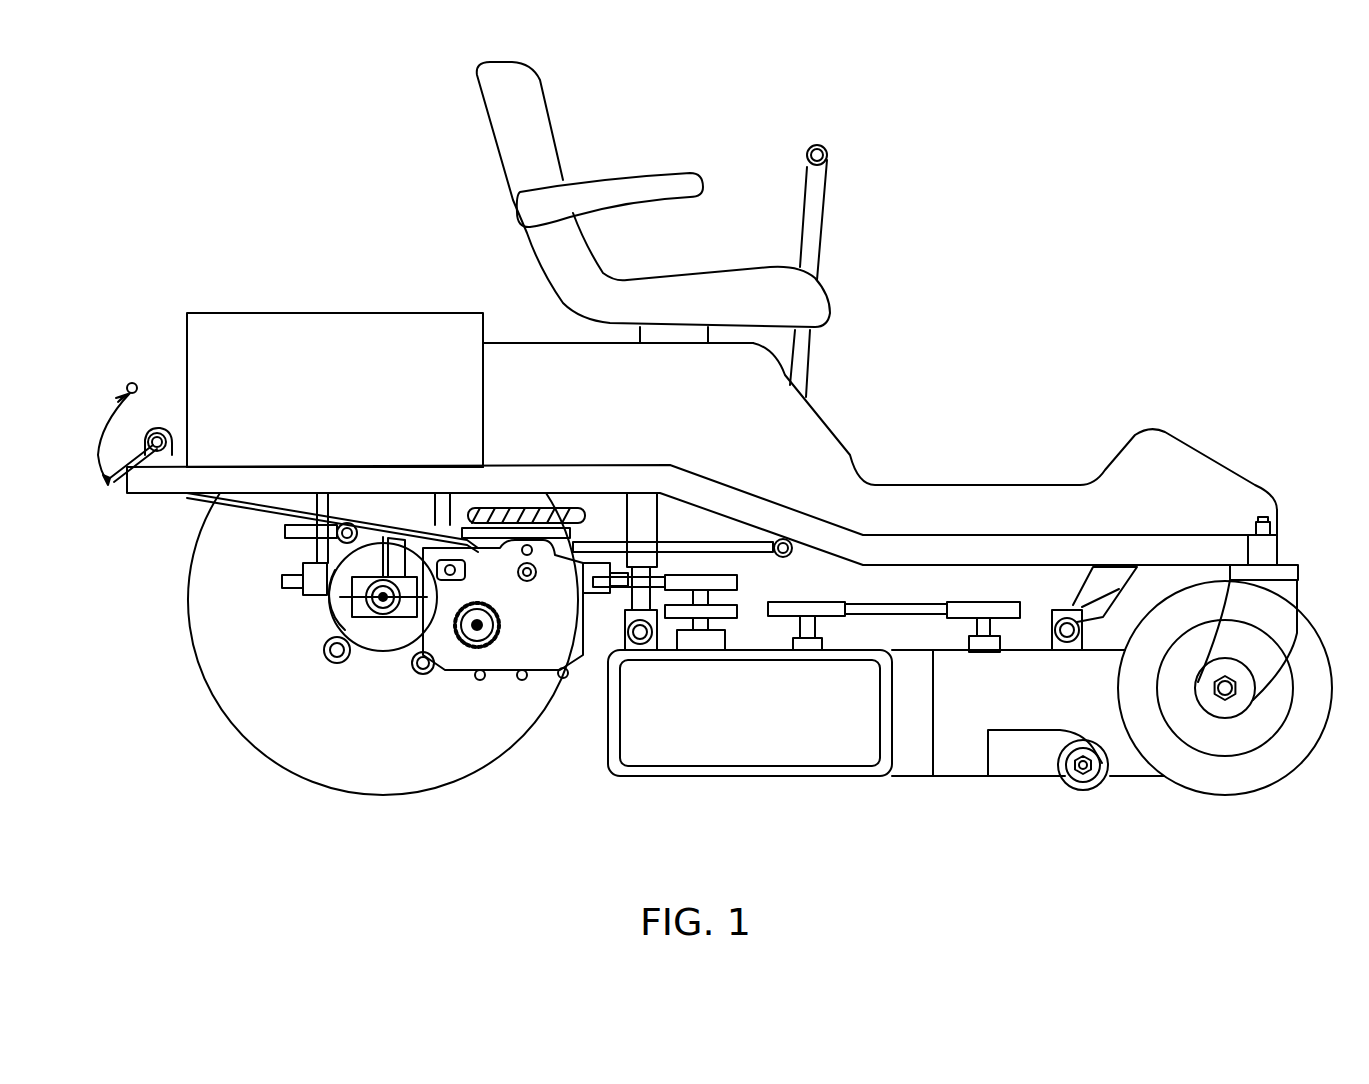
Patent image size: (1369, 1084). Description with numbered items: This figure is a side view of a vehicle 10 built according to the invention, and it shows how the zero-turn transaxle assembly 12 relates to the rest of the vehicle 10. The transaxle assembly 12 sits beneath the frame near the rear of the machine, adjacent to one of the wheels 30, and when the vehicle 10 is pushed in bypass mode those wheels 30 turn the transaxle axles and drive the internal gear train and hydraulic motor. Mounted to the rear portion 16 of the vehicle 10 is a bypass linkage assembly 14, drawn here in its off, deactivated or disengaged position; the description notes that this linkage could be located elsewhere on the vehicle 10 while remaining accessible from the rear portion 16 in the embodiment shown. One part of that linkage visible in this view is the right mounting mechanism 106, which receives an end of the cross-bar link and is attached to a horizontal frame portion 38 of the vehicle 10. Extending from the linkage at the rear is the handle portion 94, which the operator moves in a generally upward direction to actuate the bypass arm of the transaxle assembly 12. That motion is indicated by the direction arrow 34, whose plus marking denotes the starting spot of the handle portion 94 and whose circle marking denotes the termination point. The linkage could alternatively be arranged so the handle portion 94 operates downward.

The vehicle 10 is at (1022, 300).
The zero-turn transaxle assembly 12 is at (304, 671).
The bypass linkage assembly 14 is at (258, 527).
The rear portion 16 is at (146, 508).
The wheels 30 is at (399, 756).
The direction arrow 34 is at (100, 438).
The horizontal frame portion 38 is at (400, 465).
The handle portion 94 is at (120, 481).
The right mounting mechanism 106 is at (173, 448).